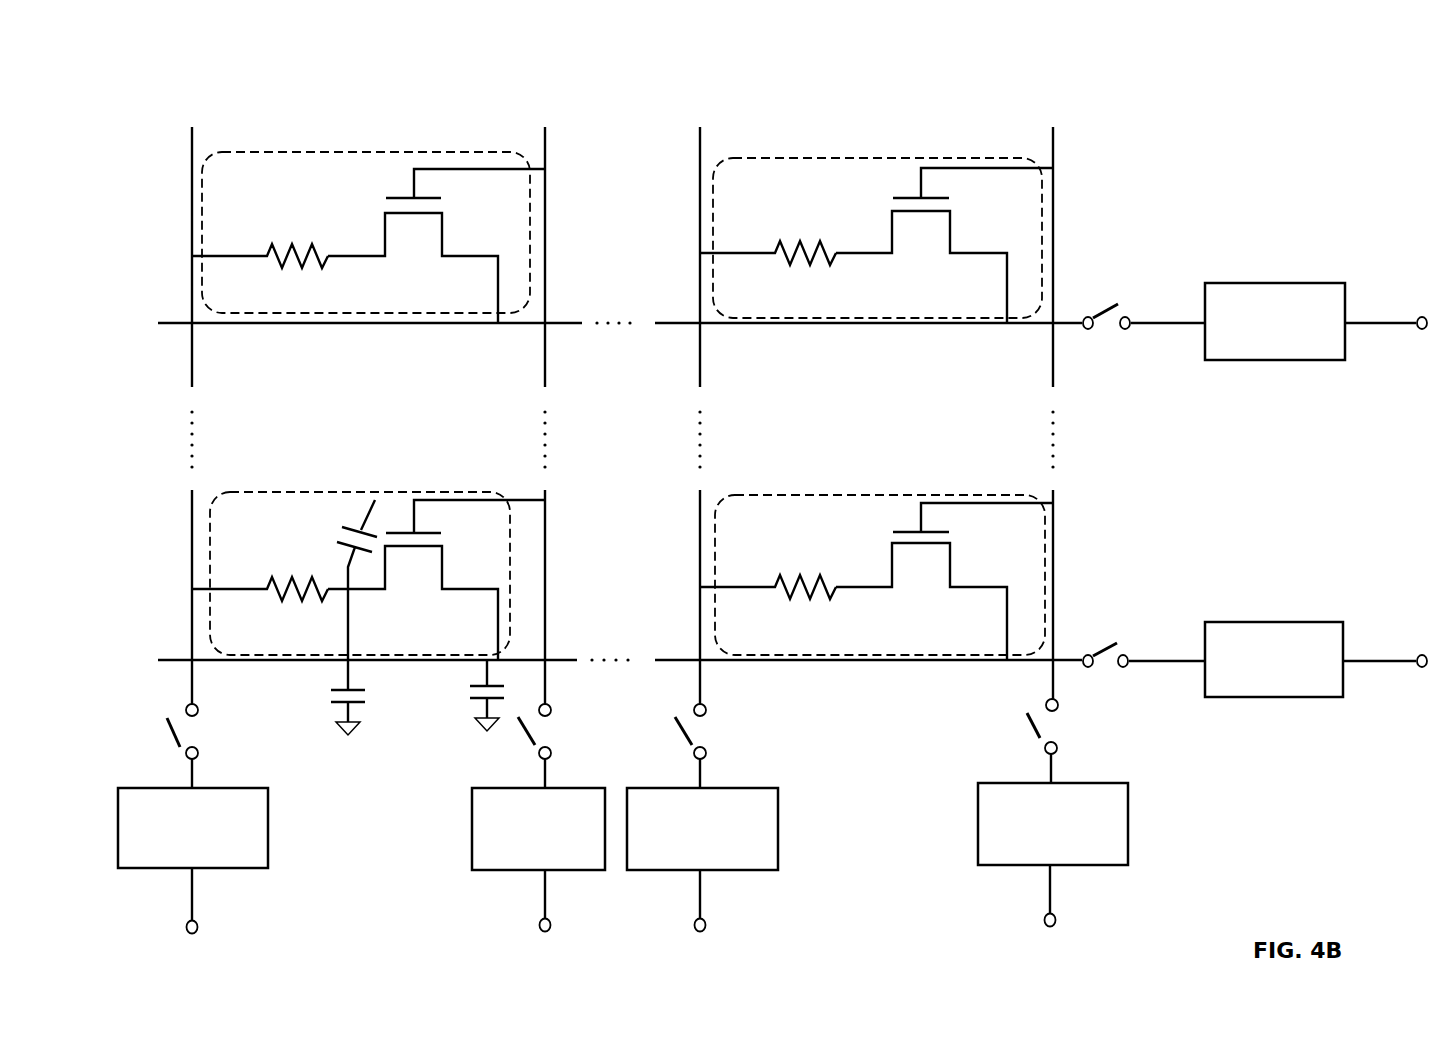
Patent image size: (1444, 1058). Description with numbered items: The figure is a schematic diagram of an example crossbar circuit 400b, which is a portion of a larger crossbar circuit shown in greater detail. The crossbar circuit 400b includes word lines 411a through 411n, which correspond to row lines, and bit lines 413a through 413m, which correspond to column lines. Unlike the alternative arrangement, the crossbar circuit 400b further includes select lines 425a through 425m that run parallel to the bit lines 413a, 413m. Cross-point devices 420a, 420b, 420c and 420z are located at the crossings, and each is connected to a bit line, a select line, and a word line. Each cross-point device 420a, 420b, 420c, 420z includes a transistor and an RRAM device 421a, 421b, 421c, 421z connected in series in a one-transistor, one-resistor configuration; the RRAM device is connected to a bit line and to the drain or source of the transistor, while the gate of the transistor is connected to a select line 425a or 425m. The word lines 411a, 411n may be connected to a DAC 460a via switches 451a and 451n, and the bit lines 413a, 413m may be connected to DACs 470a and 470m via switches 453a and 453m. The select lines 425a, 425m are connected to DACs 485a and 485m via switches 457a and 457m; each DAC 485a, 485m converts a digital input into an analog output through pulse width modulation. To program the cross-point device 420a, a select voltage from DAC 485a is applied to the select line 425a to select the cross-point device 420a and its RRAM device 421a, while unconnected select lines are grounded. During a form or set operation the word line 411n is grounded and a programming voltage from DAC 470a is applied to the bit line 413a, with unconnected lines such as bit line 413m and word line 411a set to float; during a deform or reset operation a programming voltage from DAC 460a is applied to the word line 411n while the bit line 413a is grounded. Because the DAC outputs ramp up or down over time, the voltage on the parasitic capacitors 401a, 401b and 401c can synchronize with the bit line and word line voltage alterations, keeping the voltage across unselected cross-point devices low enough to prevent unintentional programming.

The crossbar circuit 400b is at (772, 68).
The bit line 413a is at (195, 397).
The select line 425a is at (540, 397).
The bit line 413m is at (701, 397).
The select line 425m is at (1066, 394).
The word line 411n is at (586, 317).
The word line 411a is at (586, 657).
The cross-point device 420a is at (402, 237).
The cross-point device 420b is at (919, 235).
The cross-point device 420c is at (403, 561).
The cross-point device 420z is at (914, 578).
The RRAM device 421a is at (315, 271).
The RRAM device 421b is at (825, 268).
The RRAM device 421c is at (291, 607).
The RRAM device 421z is at (824, 603).
The parasitic capacitor 401a is at (342, 521).
The parasitic capacitor 401b is at (323, 701).
The parasitic capacitor 401c is at (465, 704).
The switch 451n is at (1088, 316).
The switch 451a is at (1088, 652).
The switch 453a is at (182, 752).
The switch 453m is at (708, 756).
The switch 457a is at (553, 756).
The switch 457m is at (1059, 752).
The DAC 460a is at (1247, 350).
The DAC 470a is at (165, 857).
The DAC 470m is at (672, 857).
The DAC 485a is at (511, 857).
The DAC 485m is at (1023, 853).